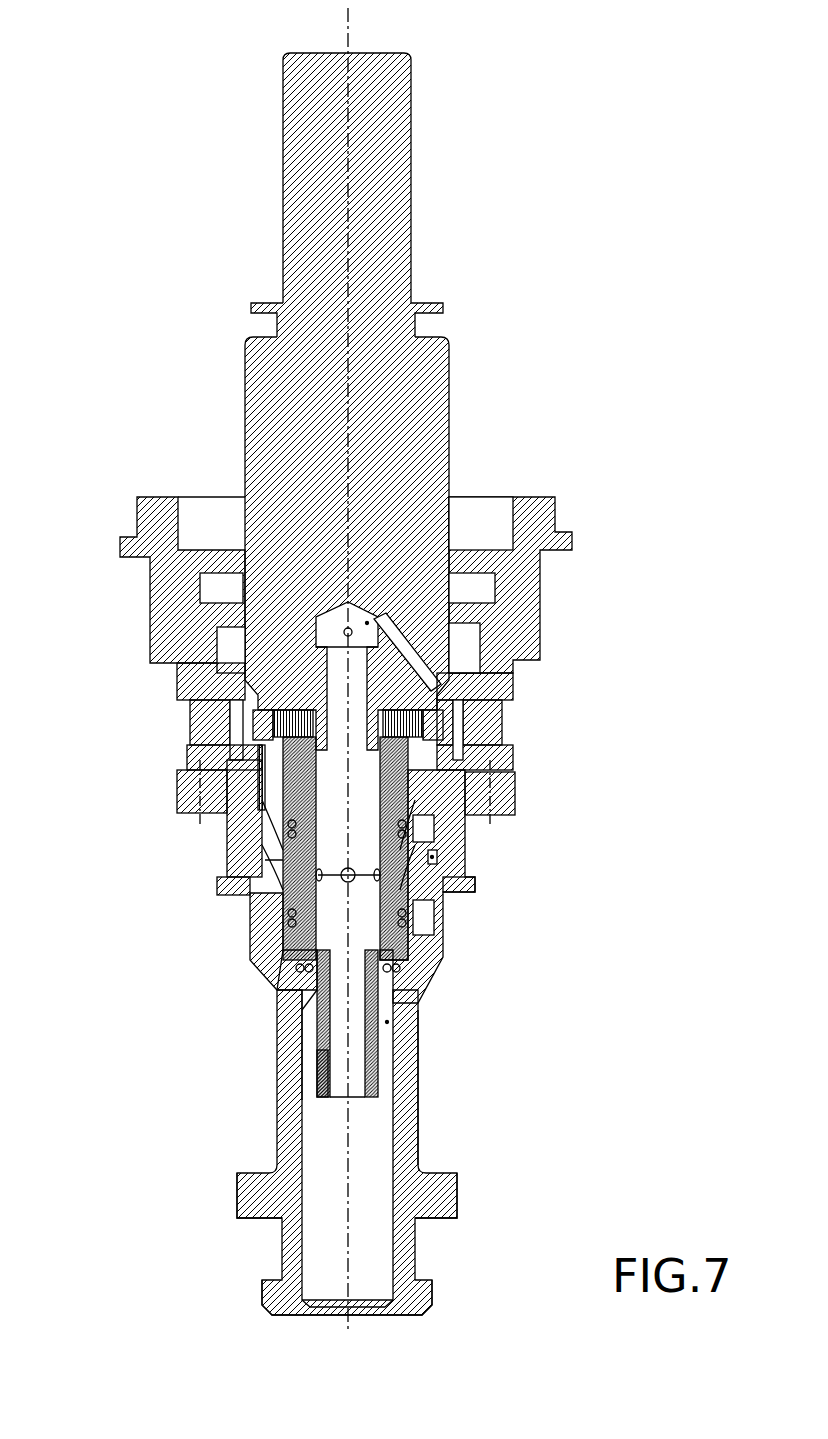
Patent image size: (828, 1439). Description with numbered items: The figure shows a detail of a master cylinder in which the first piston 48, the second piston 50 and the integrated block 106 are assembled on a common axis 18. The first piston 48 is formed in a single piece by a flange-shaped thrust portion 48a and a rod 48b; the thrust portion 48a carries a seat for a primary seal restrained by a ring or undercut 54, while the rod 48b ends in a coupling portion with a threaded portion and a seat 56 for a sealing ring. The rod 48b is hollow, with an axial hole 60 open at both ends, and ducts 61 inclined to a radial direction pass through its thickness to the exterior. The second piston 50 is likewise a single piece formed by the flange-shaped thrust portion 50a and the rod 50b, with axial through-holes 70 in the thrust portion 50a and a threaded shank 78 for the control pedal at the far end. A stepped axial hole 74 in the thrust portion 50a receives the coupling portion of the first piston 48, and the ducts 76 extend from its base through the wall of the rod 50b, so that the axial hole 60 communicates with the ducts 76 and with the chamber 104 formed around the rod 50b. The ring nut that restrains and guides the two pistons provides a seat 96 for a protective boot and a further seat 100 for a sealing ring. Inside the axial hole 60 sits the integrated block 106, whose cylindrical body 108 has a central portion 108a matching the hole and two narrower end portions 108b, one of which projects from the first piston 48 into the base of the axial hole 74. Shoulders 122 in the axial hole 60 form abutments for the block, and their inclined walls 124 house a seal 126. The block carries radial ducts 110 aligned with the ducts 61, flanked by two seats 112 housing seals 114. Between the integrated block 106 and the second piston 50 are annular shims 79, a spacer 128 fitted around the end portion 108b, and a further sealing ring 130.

The longitudinal axis 18 is at (348, 38).
The shank 78 is at (400, 181).
The second piston 50 is at (447, 390).
The thrust portion 50a is at (515, 782).
The rod 50b is at (440, 438).
The seat 96 is at (568, 540).
The axial hole 74 is at (367, 623).
The seat 100 is at (480, 630).
The ducts 76 is at (265, 666).
The sealing ring 130 is at (432, 693).
The shims 79 is at (447, 718).
The chamber 104 is at (462, 733).
The integrated block 106 is at (480, 770).
The axial through-holes 70 is at (197, 807).
The seat 56 is at (432, 857).
The cylindrical body 108 is at (420, 887).
The central portion 108a is at (290, 783).
The end portions 108b is at (245, 690).
The ducts 61 is at (252, 907).
The radial ducts 110 is at (443, 953).
The axial hole 60 is at (387, 1022).
The first piston 48 is at (422, 1040).
The thrust portion 48a is at (450, 1195).
The rod 48b is at (417, 1110).
The undercut 54 is at (430, 1280).
The spacer 128 is at (187, 725).
The seats 112 is at (240, 830).
The seals 114 is at (247, 870).
The shoulders 122 is at (287, 983).
The inclined walls 124 is at (267, 977).
The seal 126 is at (287, 1010).